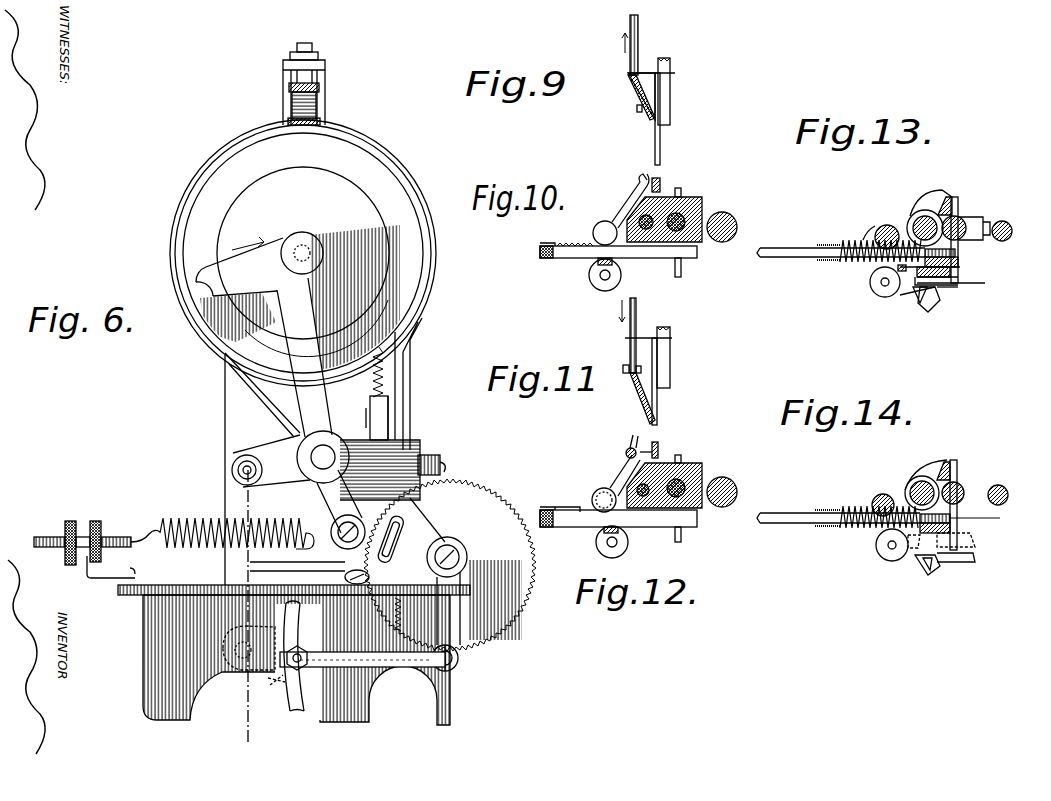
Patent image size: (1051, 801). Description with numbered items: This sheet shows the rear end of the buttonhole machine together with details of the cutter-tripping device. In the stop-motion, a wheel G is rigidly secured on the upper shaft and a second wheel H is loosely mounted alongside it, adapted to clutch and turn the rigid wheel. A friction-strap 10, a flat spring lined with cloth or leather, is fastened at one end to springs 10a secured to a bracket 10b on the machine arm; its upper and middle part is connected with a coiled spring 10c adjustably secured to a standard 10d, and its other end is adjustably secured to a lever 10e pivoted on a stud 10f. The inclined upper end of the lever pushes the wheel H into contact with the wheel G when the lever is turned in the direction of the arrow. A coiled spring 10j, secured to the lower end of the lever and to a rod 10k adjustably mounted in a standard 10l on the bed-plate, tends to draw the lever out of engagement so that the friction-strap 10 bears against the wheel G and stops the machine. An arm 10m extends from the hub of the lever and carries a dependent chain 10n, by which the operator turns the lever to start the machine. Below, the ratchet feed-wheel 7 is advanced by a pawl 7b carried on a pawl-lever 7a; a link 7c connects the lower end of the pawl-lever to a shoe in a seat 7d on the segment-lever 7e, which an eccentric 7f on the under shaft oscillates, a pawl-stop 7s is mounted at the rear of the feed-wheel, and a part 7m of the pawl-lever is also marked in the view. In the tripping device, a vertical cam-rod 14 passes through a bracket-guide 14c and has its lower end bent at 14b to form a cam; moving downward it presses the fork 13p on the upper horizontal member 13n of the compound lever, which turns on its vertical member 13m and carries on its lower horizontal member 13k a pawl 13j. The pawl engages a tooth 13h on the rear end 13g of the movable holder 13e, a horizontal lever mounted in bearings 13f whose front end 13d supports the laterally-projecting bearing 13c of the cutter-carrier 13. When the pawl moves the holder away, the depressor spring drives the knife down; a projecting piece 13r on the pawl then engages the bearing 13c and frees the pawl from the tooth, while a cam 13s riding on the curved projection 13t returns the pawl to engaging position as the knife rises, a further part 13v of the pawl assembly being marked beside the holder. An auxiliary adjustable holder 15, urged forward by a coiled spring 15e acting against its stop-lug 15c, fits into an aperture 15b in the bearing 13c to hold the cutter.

In FIG. 6, the friction-strap 10 is at (172, 250).
In FIG. 6, the wheel G is at (212, 183).
In FIG. 6, the wheel H is at (316, 252).
In FIG. 6, the springs 10a is at (395, 378).
In FIG. 6, the bracket 10b is at (378, 413).
In FIG. 6, the coiled spring 10c is at (292, 104).
In FIG. 6, the standard 10d is at (283, 66).
In FIG. 6, the lever 10e is at (264, 334).
In FIG. 6, the stud 10f is at (302, 443).
In FIG. 6, the coiled spring 10j is at (237, 520).
In FIG. 6, the rod 10k is at (40, 536).
In FIG. 6, the standard 10l is at (107, 588).
In FIG. 6, the arm 10m is at (306, 457).
In FIG. 6, the chain 10n is at (262, 562).
In FIG. 6, the ratchet feed-wheel 7 is at (450, 565).
In FIG. 6, the pawl-lever 7a is at (431, 591).
In FIG. 6, the pawl 7b is at (458, 660).
In FIG. 6, the link 7c is at (362, 657).
In FIG. 6, the seat 7d is at (295, 712).
In FIG. 6, the segment-lever 7e is at (305, 705).
In FIG. 6, the eccentric 7f is at (247, 666).
In FIG. 6, the slot 7m is at (399, 539).
In FIG. 6, the pawl-stop 7s is at (356, 552).
In FIG. 9, the cam-rod 14 is at (640, 45).
In FIG. 11, the cam-rod 14 is at (637, 315).
In FIG. 9, the cam 14b is at (628, 80).
In FIG. 11, the cam 14b is at (632, 388).
In FIG. 9, the bracket-guide 14c is at (672, 73).
In FIG. 11, the bracket-guide 14c is at (672, 338).
In FIG. 9, the fork 13p is at (639, 112).
In FIG. 10, the fork 13p is at (643, 183).
In FIG. 11, the fork 13p is at (623, 368).
In FIG. 12, the fork 13p is at (627, 448).
In FIG. 10, the upper horizontal member 13n is at (630, 213).
In FIG. 12, the upper horizontal member 13n is at (616, 476).
In FIG. 13, the auxiliary adjustable holder 15 is at (790, 254).
In FIG. 14, the auxiliary adjustable holder 15 is at (787, 524).
In FIG. 13, the coiled spring 15e is at (850, 259).
In FIG. 14, the coiled spring 15e is at (857, 527).
In FIG. 13, the stop-lug 15c is at (958, 254).
In FIG. 14, the stop-lug 15c is at (907, 512).
In FIG. 14, the aperture 15b is at (992, 518).
In FIG. 14, the cutter-carrier 13 is at (960, 493).
In FIG. 13, the laterally-projecting bearing 13c is at (962, 200).
In FIG. 14, the laterally-projecting bearing 13c is at (958, 462).
In FIG. 13, the front end 13d is at (942, 190).
In FIG. 14, the front end 13d is at (932, 460).
In FIG. 13, the movable holder 13e is at (960, 250).
In FIG. 14, the movable holder 13e is at (950, 512).
In FIG. 13, the bearings 13f is at (925, 210).
In FIG. 14, the bearings 13f is at (912, 488).
In FIG. 13, the rear end 13g is at (922, 305).
In FIG. 14, the rear end 13g is at (926, 570).
In FIG. 13, the tooth 13h is at (938, 288).
In FIG. 14, the tooth 13h is at (968, 542).
In FIG. 13, the pawl 13j is at (902, 292).
In FIG. 14, the pawl 13j is at (915, 557).
In FIG. 13, the lower horizontal member 13k is at (877, 292).
In FIG. 14, the lower horizontal member 13k is at (882, 553).
In FIG. 13, the vertical member 13m is at (883, 226).
In FIG. 14, the vertical member 13m is at (875, 502).
In FIG. 13, the projecting piece 13r is at (963, 282).
In FIG. 14, the projecting piece 13r is at (980, 556).
In FIG. 13, the cam 13s is at (917, 303).
In FIG. 13, the curved projection 13t is at (937, 322).
In FIG. 14, the curved projection 13t is at (932, 565).
In FIG. 13, the slide 13v is at (960, 267).